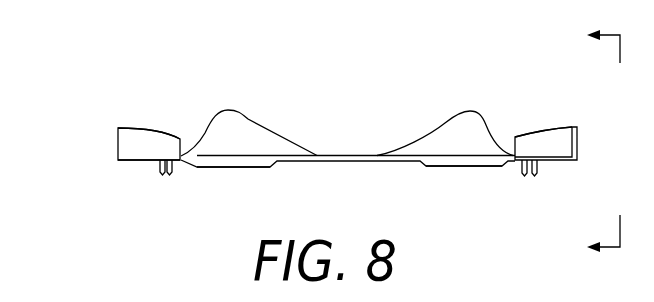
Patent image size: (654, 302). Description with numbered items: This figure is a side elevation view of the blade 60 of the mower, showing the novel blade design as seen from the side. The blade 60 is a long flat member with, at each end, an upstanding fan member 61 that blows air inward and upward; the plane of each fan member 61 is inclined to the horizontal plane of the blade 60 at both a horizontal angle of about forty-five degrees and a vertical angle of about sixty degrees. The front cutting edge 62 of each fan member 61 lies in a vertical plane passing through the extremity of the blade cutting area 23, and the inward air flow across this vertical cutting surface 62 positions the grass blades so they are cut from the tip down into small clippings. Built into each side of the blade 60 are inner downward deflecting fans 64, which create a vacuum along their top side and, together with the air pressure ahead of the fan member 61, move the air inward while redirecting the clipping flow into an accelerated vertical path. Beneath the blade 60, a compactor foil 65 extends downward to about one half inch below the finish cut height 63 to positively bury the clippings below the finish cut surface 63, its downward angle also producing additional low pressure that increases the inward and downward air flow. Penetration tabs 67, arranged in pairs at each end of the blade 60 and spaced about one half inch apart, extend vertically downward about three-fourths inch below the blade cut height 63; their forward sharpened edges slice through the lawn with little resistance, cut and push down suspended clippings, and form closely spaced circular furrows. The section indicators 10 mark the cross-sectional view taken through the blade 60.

The section line indicator 10 is at (580, 141).
The blade cutting area 23 is at (118, 160).
The blade 60 is at (337, 155).
The fan member 61 is at (162, 128).
The front cutting edge 62 is at (118, 141).
The finish cut surface 63 is at (558, 162).
The inner downward deflecting fan 64 is at (248, 117).
The compactor foil 65 is at (237, 167).
The penetration tab 67 is at (167, 176).